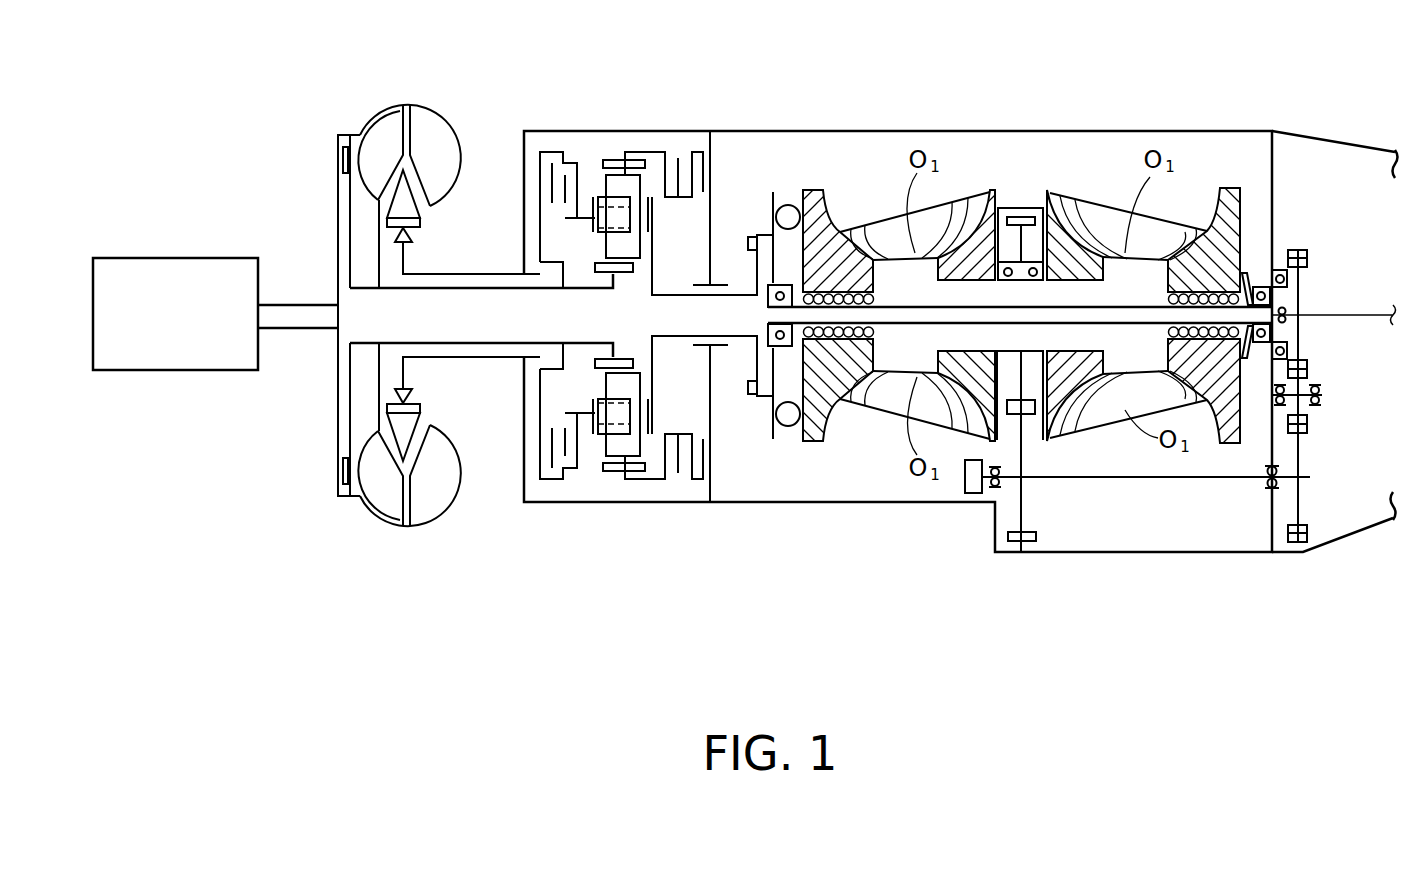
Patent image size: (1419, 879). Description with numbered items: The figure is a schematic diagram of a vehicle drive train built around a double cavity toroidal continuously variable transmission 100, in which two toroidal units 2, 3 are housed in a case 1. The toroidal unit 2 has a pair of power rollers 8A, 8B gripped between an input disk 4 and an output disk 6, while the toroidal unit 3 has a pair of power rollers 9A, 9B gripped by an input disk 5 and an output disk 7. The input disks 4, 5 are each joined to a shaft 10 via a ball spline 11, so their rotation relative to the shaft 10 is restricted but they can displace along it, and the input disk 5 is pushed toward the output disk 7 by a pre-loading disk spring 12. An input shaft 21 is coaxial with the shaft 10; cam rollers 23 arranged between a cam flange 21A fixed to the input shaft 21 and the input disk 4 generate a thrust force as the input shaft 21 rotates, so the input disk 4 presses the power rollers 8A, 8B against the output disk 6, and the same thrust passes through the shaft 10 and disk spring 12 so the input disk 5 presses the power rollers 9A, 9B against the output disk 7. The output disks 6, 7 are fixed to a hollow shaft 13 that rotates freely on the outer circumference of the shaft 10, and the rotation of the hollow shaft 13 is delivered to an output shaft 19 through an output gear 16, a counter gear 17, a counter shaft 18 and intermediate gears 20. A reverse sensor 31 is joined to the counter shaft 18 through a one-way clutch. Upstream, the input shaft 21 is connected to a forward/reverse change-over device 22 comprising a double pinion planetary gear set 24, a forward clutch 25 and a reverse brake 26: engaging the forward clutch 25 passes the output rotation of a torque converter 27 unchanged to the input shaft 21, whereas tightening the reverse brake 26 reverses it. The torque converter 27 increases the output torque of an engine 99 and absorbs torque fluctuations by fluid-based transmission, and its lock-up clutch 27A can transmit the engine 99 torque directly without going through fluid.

The case 1 is at (582, 130).
The toroidal unit 2 is at (907, 317).
The toroidal unit 3 is at (1151, 342).
The input disk 4 is at (815, 188).
The input disk 5 is at (1225, 188).
The output disk 6 is at (991, 190).
The output disk 7 is at (1052, 190).
The power roller 8A is at (955, 202).
The power roller 8B is at (957, 427).
The power roller 9A is at (1092, 217).
The power roller 9B is at (1098, 420).
The shaft 10 is at (892, 330).
The ball spline 11 is at (811, 440).
The pre-loading disk spring 12 is at (1249, 272).
The hollow shaft 13 is at (1030, 405).
The output gear 16 is at (1027, 215).
The counter gear 17 is at (1021, 553).
The counter shaft 18 is at (1072, 480).
The output shaft 19 is at (1325, 310).
The intermediate gears 20 is at (1300, 467).
The input shaft 21 is at (746, 290).
The cam flange 21A is at (776, 425).
The forward/reverse change-over device 22 is at (634, 317).
The cam rollers 23 is at (788, 200).
The double pinion planetary gear set 24 is at (603, 445).
The forward clutch 25 is at (573, 473).
The reverse brake 26 is at (683, 480).
The torque converter 27 is at (408, 90).
The lock-up clutch 27A is at (338, 212).
The reverse sensor 31 is at (972, 495).
The engine 99 is at (192, 372).
The toroidal continuously variable transmission 100 is at (928, 585).